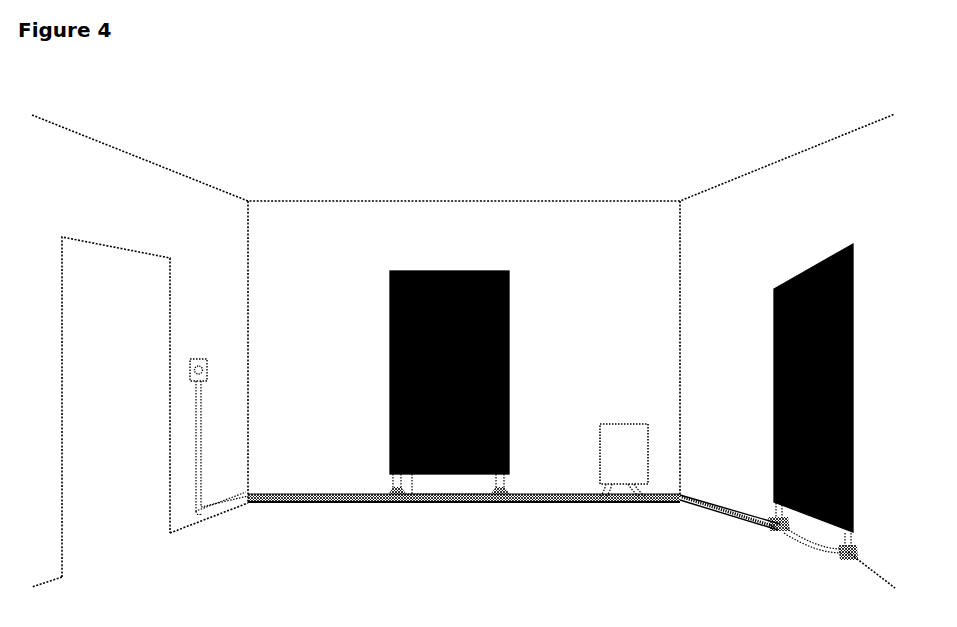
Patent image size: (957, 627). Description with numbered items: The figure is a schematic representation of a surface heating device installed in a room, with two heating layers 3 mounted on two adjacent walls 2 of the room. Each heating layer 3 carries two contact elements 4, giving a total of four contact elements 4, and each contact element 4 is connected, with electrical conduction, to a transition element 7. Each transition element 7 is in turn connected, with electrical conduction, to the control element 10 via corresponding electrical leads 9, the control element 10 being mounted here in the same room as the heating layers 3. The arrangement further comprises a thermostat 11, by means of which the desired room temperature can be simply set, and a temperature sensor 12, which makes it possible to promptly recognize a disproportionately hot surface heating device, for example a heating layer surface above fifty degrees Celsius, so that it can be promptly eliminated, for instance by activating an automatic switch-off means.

The wall to be heated 2 is at (722, 203).
The heating layer 3 is at (390, 283).
The contact element 4 is at (393, 479).
The transition element 7 is at (487, 494).
The electrical lead 9 is at (605, 497).
The control element 10 is at (623, 428).
The thermostat 11 is at (204, 358).
The temperature sensor 12 is at (418, 470).